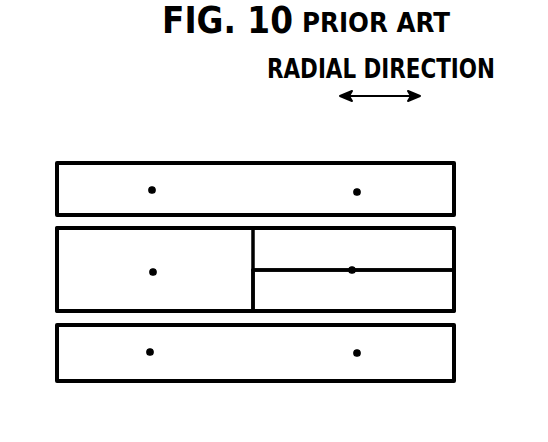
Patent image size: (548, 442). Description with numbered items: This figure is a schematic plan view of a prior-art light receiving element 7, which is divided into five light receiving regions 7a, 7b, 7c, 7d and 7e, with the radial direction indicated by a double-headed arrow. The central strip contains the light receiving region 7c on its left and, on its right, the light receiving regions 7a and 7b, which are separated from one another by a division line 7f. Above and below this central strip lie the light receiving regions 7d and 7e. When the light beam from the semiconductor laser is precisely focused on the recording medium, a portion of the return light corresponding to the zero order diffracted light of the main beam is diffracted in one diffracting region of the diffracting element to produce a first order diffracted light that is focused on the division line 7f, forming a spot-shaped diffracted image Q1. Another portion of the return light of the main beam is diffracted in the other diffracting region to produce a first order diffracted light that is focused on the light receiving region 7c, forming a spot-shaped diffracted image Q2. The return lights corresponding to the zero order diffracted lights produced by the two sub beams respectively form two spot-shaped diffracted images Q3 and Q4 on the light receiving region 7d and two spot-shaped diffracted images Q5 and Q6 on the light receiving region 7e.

The light receiving element 7 is at (101, 393).
The light receiving region 7a is at (443, 240).
The light receiving region 7b is at (440, 298).
The light receiving region 7c is at (75, 281).
The light receiving region 7d is at (216, 181).
The light receiving region 7e is at (310, 363).
The division line 7f is at (455, 270).
The spot-shaped diffracted image Q1 is at (352, 270).
The spot-shaped diffracted image Q2 is at (153, 272).
The spot-shaped diffracted image Q3 is at (357, 192).
The spot-shaped diffracted image Q4 is at (152, 190).
The spot-shaped diffracted image Q5 is at (357, 353).
The spot-shaped diffracted image Q6 is at (150, 353).